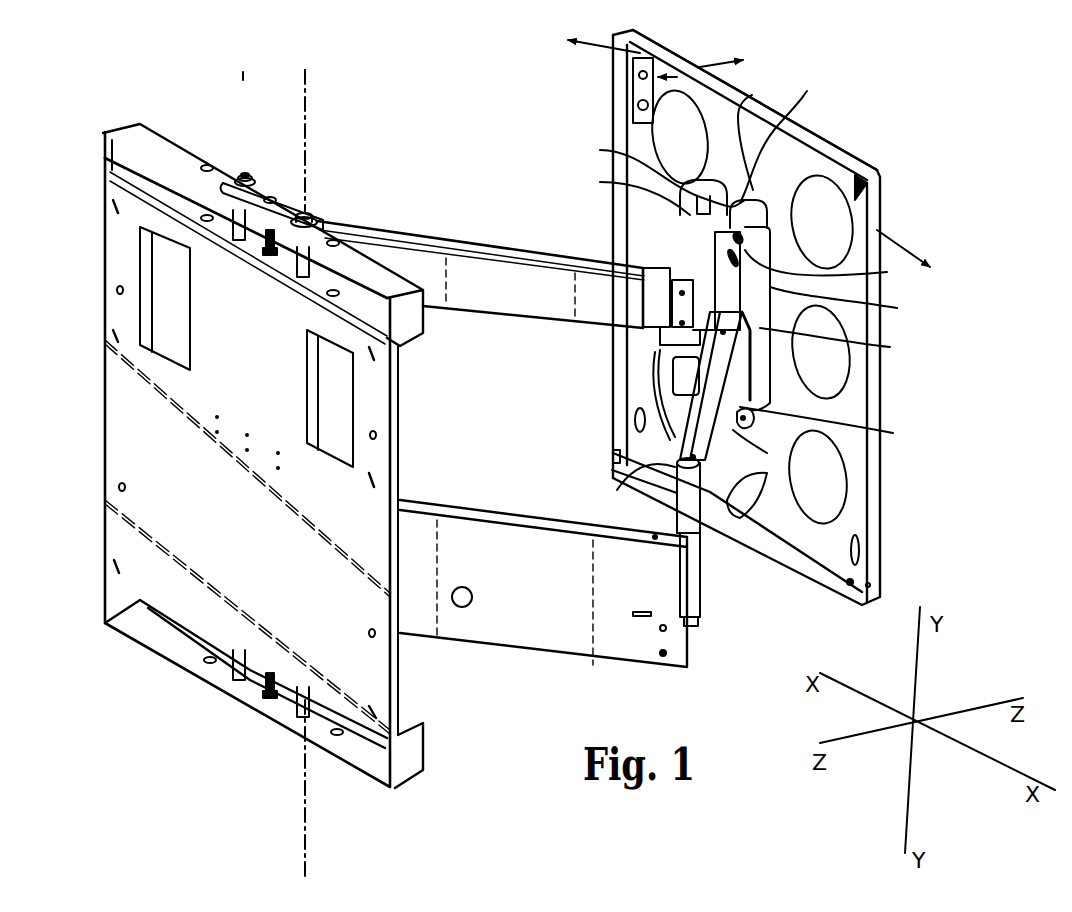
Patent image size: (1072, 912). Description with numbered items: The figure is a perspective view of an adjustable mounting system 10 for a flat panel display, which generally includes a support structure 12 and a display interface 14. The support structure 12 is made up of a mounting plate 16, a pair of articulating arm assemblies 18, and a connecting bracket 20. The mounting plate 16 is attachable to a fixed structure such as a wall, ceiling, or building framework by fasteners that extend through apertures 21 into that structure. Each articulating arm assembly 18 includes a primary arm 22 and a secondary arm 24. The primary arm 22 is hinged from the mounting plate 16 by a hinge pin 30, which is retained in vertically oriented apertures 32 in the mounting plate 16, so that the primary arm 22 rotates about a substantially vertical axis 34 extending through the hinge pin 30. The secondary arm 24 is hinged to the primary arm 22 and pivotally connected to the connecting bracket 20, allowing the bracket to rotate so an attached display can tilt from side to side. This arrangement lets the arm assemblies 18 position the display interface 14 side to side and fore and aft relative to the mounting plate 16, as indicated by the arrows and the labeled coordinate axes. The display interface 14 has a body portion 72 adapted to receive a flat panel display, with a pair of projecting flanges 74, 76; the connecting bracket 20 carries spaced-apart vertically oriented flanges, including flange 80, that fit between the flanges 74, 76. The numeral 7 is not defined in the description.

The adjustable mounting system 10 is at (164, 100).
The support structure 12 is at (377, 205).
The display interface 14 is at (603, 118).
The mounting plate 16 is at (135, 540).
The articulating arm assemblies 18 is at (480, 272).
The connecting bracket 20 is at (306, 212).
The apertures 21 is at (117, 291).
The primary arm 22 is at (632, 653).
The secondary arm 24 is at (558, 330).
The hinge pin 30 is at (243, 75).
The vertically oriented apertures 32 is at (303, 212).
The substantially vertical axis 34 is at (245, 80).
The body portion 72 is at (853, 153).
The projecting flange 74 is at (600, 150).
The cable 7 is at (600, 182).
The projecting flange 76 is at (890, 348).
The vertically oriented flange 80 is at (807, 91).